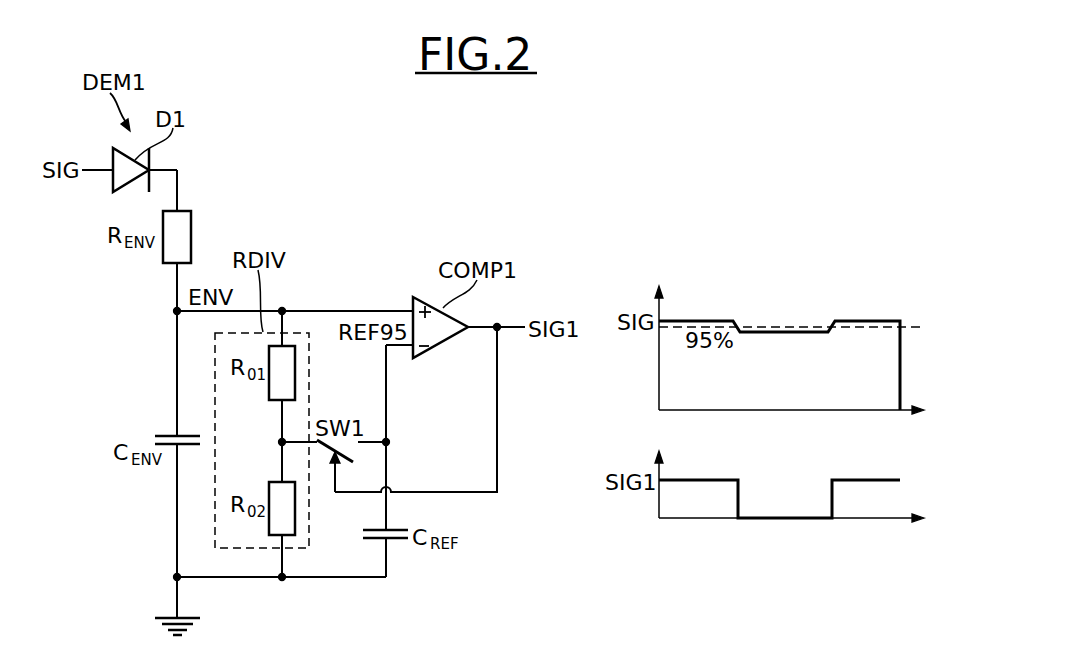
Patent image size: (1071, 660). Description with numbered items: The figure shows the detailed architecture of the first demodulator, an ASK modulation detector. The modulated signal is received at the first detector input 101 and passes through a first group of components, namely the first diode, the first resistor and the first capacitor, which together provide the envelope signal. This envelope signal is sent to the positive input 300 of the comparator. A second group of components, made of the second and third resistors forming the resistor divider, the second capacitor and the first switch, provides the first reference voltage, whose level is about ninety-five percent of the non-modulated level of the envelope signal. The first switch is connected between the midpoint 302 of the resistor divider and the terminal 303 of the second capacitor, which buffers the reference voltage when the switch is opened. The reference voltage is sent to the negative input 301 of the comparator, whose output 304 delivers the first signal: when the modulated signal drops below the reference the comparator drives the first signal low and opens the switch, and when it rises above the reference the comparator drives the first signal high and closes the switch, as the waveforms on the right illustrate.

The first detector input 101 is at (112, 167).
The positive input 300 is at (413, 308).
The negative input 301 is at (413, 350).
The midpoint 302 is at (282, 442).
The terminal 303 is at (389, 441).
The comparator output 304 is at (469, 332).